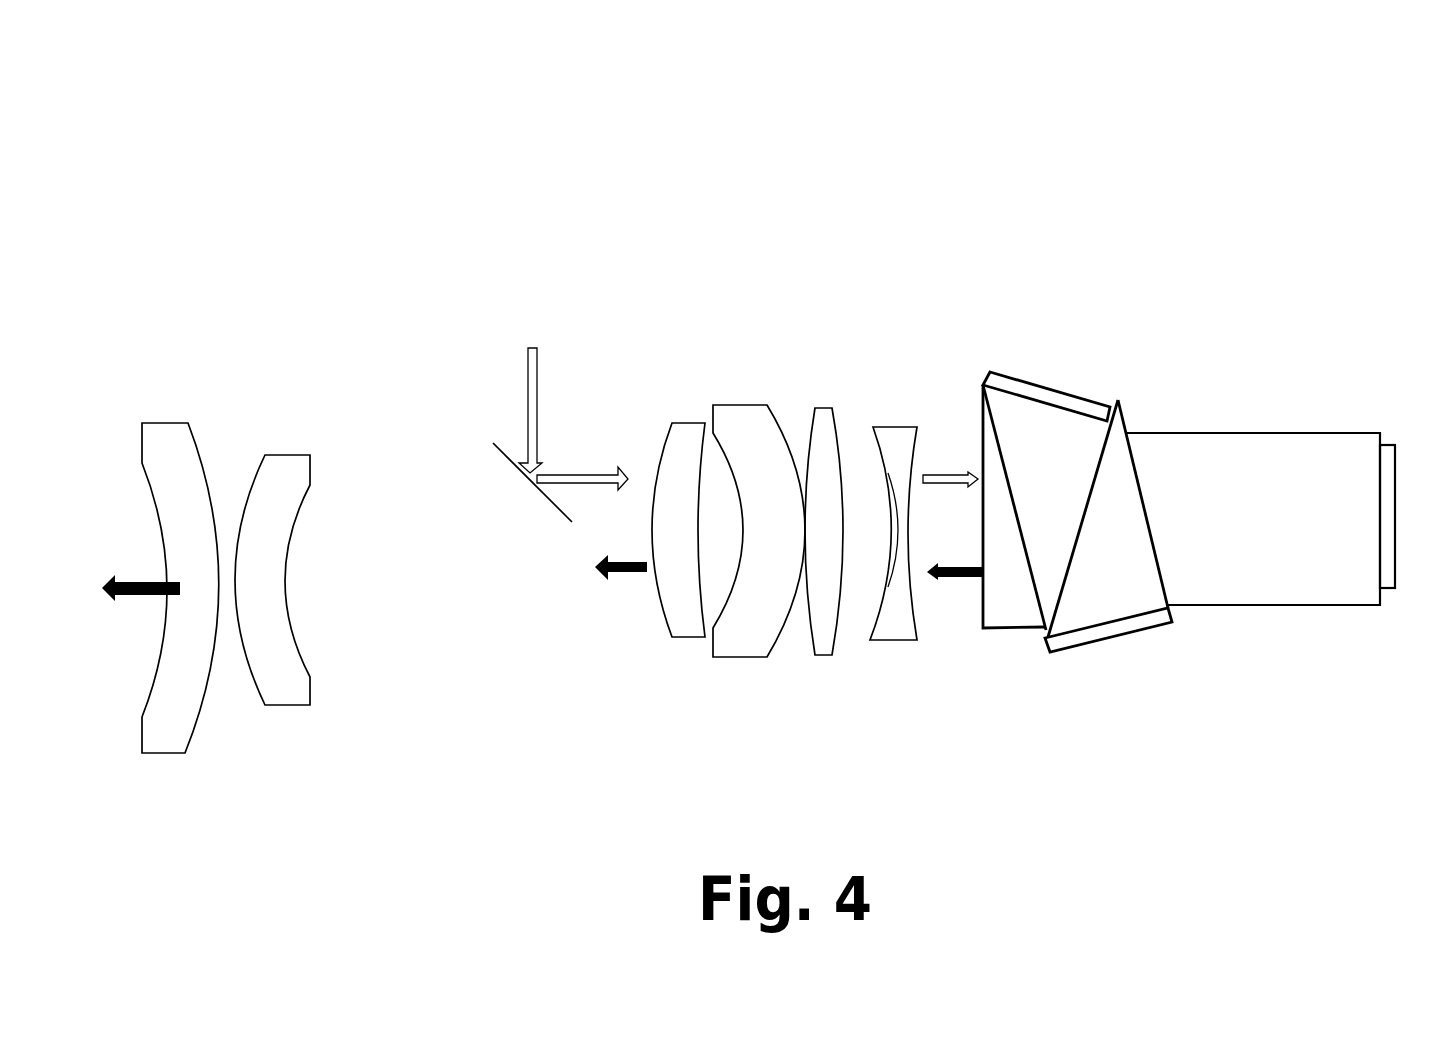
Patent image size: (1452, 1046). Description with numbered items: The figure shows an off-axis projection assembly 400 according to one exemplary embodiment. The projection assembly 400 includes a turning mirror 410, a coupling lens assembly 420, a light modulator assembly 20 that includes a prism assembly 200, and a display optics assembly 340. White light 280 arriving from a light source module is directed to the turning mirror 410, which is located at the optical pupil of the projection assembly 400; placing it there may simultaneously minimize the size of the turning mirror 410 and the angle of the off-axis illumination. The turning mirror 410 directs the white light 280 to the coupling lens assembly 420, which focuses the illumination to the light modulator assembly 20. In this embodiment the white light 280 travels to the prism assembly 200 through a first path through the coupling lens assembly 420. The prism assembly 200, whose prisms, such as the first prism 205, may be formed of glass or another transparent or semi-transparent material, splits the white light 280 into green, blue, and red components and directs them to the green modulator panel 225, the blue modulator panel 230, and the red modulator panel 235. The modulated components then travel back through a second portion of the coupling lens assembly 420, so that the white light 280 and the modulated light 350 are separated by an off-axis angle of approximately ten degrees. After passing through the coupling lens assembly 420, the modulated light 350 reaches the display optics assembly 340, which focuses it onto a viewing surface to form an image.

The off-axis projection assembly 400 is at (467, 172).
The display optics assembly 340 is at (238, 345).
The white light 280 is at (537, 387).
The turning mirror 410 is at (532, 487).
The coupling lens assembly 420 is at (793, 382).
The modulated light 350 is at (953, 580).
The light modulator assembly 20 is at (1115, 265).
The first prism 205 is at (983, 628).
The green modulator panel 225 is at (1052, 388).
The blue modulator panel 230 is at (1117, 630).
The prism assembly 200 is at (1153, 382).
The red modulator panel 235 is at (1395, 477).